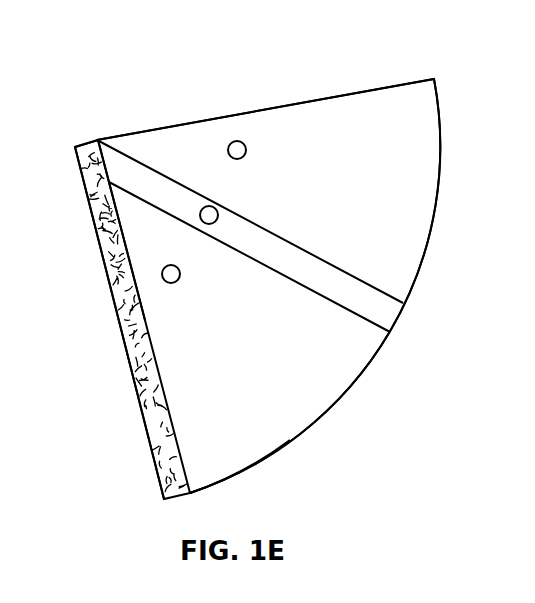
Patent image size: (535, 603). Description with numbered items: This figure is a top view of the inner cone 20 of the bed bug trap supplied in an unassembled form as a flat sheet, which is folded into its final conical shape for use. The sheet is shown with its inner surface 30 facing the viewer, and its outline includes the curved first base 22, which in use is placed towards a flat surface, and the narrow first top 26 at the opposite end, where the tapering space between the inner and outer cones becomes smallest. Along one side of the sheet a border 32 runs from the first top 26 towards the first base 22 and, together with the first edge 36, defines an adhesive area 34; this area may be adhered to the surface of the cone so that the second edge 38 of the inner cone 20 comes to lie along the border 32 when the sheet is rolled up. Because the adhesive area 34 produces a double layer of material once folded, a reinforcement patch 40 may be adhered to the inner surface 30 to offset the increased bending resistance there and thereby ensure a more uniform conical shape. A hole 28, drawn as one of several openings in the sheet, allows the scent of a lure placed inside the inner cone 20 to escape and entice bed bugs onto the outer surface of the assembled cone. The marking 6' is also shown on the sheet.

The inner cone 20 is at (308, 98).
The second edge 38 is at (377, 87).
The first base 22 is at (439, 188).
The inner surface 30 is at (275, 393).
The reinforcement patch 40 is at (380, 312).
The hole 28 is at (236, 141).
The border 32 is at (155, 358).
The first top 26 is at (90, 142).
The first edge 36 is at (87, 193).
The adhesive area 34 is at (107, 233).
The sheet material 6' is at (104, 390).